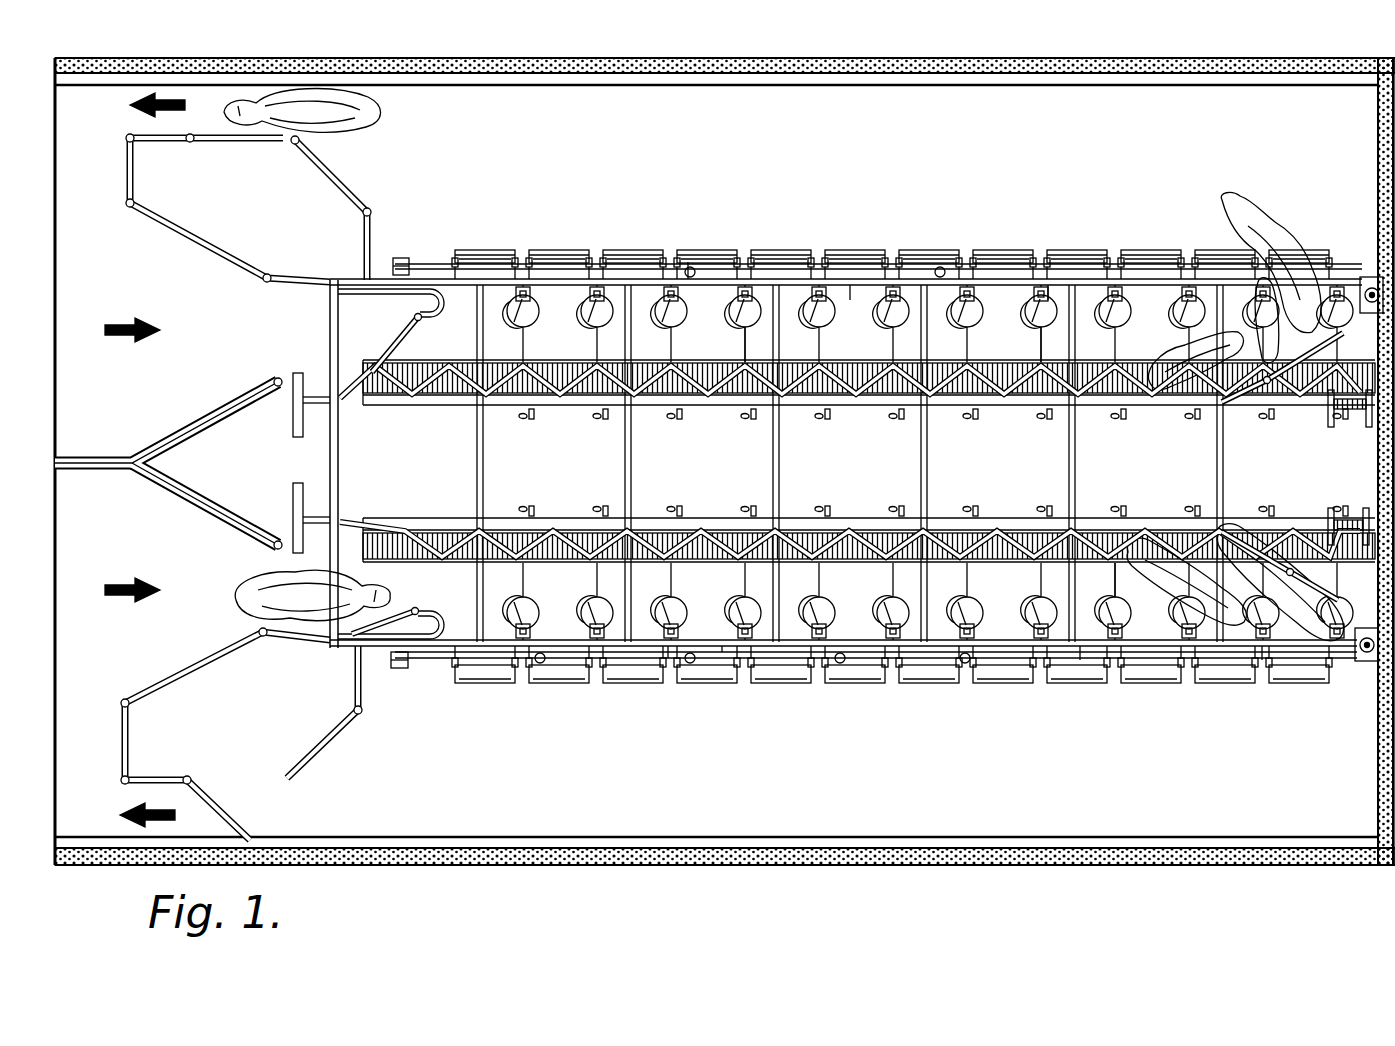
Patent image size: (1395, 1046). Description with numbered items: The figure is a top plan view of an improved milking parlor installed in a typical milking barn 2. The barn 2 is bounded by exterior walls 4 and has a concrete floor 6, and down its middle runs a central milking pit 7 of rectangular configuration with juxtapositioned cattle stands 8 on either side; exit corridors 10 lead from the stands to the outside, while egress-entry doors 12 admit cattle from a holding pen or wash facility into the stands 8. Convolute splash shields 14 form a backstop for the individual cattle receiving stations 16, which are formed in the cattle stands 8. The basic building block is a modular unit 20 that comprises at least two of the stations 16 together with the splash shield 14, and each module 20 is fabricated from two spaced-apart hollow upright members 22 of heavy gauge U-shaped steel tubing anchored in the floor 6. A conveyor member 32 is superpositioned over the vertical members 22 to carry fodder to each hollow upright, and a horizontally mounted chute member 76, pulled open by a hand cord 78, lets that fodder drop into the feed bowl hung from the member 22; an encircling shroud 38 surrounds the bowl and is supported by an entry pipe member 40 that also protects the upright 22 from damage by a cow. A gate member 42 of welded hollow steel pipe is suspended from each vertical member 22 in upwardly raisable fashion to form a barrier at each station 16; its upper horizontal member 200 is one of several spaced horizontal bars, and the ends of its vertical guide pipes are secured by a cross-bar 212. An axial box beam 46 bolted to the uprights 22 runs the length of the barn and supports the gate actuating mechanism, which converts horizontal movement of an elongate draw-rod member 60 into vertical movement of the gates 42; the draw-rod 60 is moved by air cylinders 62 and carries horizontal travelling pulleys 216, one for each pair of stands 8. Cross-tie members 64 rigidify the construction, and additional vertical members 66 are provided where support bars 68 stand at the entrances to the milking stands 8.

The milking barn 2 is at (308, 327).
The exterior walls 4 is at (740, 62).
The concrete floor 6 is at (563, 160).
The central milking pit 7 is at (557, 475).
The cattle stands 8 is at (566, 300).
The exit corridors 10 is at (950, 172).
The egress-entry doors 12 is at (297, 375).
The convolute splash shields 14 is at (424, 388).
The cattle receiving stations 16 is at (850, 300).
The modular unit 20 is at (820, 244).
The hollow upright members 22 is at (688, 262).
The conveyor member 32 is at (1358, 312).
The encircling shroud 38 is at (530, 320).
The entry pipe member 40 is at (672, 320).
The gate member 42 is at (626, 244).
The axial box beam 46 is at (1048, 300).
The draw-rod member 60 is at (428, 264).
The air cylinders 62 is at (400, 258).
The cross-tie members 64 is at (478, 470).
The vertical members 66 is at (452, 292).
The support bars 68 is at (338, 322).
The chute member 76 is at (742, 308).
The hand cord 78 is at (1040, 332).
The upper horizontal member 200 is at (940, 266).
The cross-bar 212 is at (722, 250).
The horizontal travelling pulleys 216 is at (545, 250).